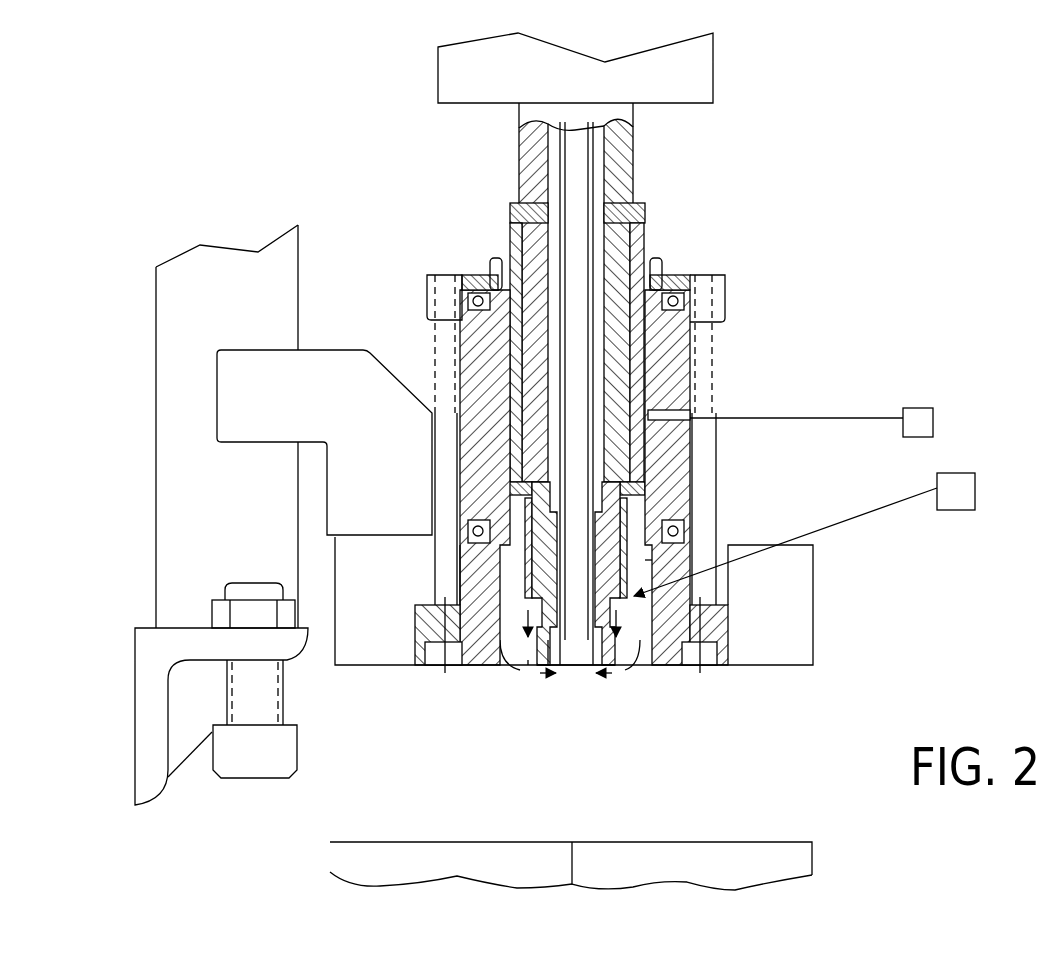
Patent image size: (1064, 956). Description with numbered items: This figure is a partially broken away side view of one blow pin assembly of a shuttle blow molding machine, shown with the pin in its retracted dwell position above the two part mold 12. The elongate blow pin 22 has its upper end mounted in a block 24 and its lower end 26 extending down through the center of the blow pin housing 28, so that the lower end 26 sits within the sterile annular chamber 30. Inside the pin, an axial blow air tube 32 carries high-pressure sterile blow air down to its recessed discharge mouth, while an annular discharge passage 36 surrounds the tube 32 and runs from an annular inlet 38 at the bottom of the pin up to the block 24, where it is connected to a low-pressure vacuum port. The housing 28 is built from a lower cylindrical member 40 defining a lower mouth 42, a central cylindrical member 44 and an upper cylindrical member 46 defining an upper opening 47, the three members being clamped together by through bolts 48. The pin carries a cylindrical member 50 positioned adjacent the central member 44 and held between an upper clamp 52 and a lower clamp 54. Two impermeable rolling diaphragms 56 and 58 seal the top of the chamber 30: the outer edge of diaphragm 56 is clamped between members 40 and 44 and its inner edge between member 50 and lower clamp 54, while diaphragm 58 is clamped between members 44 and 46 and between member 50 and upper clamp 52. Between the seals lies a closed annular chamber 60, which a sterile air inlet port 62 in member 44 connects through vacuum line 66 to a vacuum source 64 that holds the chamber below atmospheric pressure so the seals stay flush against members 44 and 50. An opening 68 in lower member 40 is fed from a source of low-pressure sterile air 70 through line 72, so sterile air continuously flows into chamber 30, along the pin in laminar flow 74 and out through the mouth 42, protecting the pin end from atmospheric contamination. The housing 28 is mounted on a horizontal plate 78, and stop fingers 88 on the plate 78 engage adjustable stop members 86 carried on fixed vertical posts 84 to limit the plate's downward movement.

The two part mold 12 is at (812, 860).
The blow pin 22 is at (505, 133).
The block 24 is at (713, 65).
The lower end of blow pin 26 is at (581, 670).
The blow pin housing 28 is at (738, 296).
The sterile annular chamber 30 is at (500, 505).
The blow air tube 32 is at (590, 148).
The annular discharge passage 36 is at (562, 200).
The annular inlet 38 is at (560, 668).
The lower cylindrical member 40 is at (490, 590).
The lower mouth 42 is at (530, 665).
The central cylindrical member 44 is at (675, 368).
The upper cylindrical member 46 is at (692, 275).
The upper opening 47 is at (512, 258).
The through bolts 48 is at (440, 470).
The cylindrical member 50 is at (510, 212).
The upper clamp 52 is at (645, 212).
The lower clamp 54 is at (680, 520).
The rolling diaphragm 56 is at (510, 435).
The rolling diaphragm seal 58 is at (470, 345).
The closed annular chamber 60 is at (495, 360).
The sterile air inlet port 62 is at (690, 398).
The vacuum source 64 is at (925, 408).
The vacuum line 66 is at (830, 418).
The opening 68 is at (692, 560).
The source of low-pressure sterile air 70 is at (972, 473).
The line 72 is at (898, 502).
The gas flow arrows 74 is at (508, 665).
The horizontal plate 78 is at (815, 650).
The fixed vertical posts 84 is at (195, 315).
The adjustable stop members 86 is at (255, 583).
The stop fingers 88 is at (230, 398).